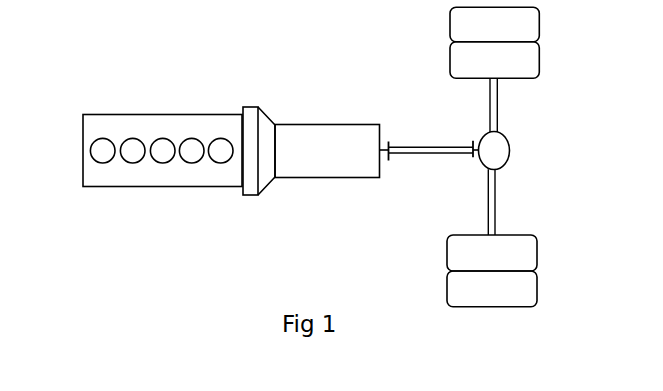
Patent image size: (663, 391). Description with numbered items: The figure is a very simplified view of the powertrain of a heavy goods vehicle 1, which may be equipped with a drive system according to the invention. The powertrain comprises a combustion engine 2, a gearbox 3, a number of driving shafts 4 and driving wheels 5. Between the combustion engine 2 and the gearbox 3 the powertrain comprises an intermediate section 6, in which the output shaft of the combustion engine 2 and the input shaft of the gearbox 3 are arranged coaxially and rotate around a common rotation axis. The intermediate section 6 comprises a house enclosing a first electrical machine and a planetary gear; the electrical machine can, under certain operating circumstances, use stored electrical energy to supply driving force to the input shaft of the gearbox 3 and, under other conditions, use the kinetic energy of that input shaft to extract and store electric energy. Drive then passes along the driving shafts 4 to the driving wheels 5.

The heavy goods vehicle 1 is at (197, 75).
The combustion engine 2 is at (150, 175).
The gearbox 3 is at (337, 158).
The driving shafts 4 is at (423, 148).
The driving wheels 5 is at (522, 58).
The intermediate section 6 is at (253, 142).